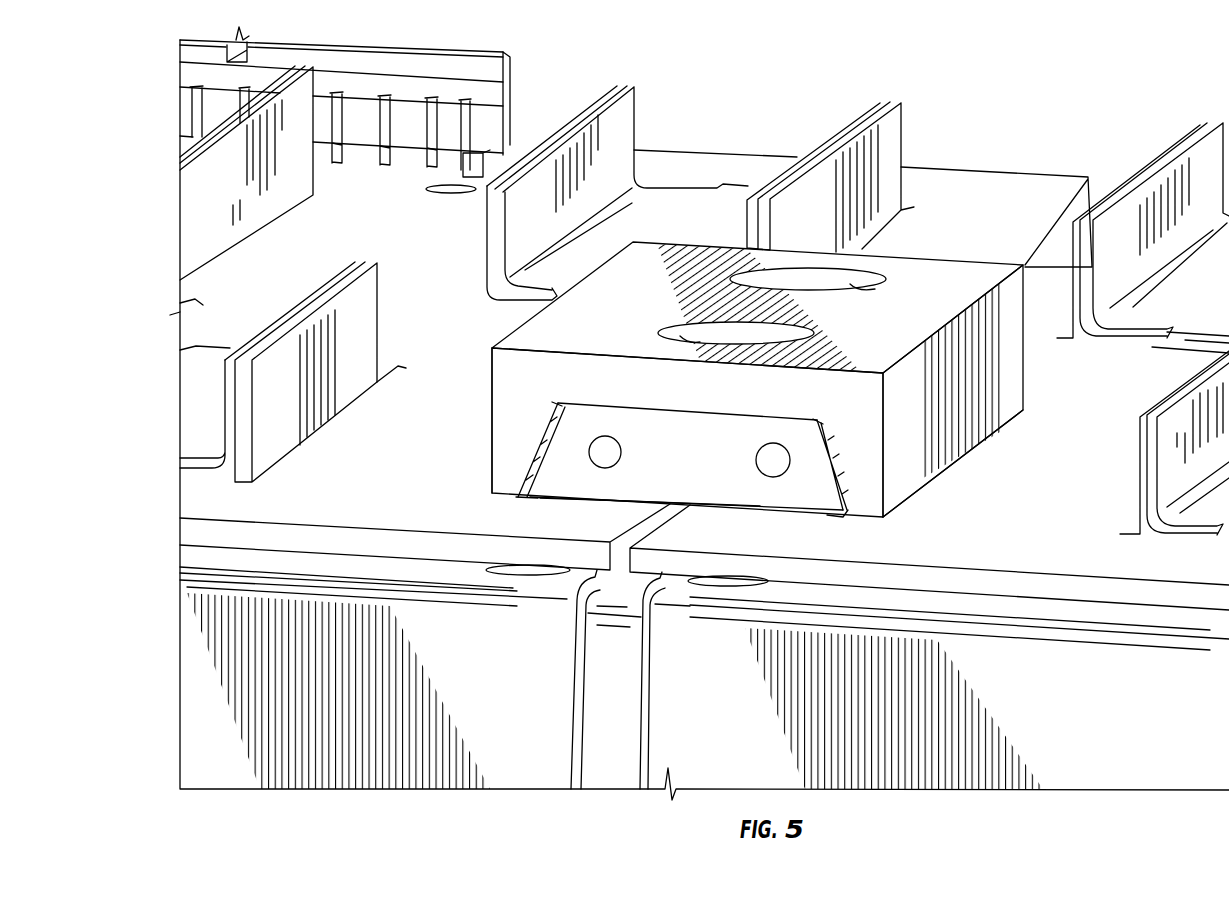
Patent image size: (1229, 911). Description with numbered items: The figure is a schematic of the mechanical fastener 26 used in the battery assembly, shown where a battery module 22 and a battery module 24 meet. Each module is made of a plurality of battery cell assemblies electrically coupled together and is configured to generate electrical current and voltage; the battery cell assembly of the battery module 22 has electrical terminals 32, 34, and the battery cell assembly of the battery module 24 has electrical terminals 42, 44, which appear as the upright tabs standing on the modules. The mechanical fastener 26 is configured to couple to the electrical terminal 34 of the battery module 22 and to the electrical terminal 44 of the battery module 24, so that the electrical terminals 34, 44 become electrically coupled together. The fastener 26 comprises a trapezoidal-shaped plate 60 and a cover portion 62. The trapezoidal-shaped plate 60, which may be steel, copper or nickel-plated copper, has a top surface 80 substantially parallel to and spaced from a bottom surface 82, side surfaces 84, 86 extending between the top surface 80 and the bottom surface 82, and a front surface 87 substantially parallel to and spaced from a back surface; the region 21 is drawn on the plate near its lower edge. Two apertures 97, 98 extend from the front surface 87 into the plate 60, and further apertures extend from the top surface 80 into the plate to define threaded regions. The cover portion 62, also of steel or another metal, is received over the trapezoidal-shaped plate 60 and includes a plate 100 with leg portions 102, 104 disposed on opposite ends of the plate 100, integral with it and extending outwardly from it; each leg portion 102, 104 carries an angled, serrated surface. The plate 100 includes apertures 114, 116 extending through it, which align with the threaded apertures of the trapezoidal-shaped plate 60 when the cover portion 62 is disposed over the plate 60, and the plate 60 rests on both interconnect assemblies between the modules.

The lower edge of spring clip 21 is at (568, 492).
The battery module 22 is at (519, 673).
The battery module 24 is at (718, 673).
The mechanical fastener 26 is at (917, 250).
The electrical terminal 32 is at (892, 140).
The electrical terminal 34 is at (528, 450).
The electrical terminal 42 is at (1072, 293).
The electrical terminal 44 is at (850, 493).
The trapezoidal-shaped plate 60 is at (767, 497).
The cover portion 62 is at (958, 277).
The top surface 80 is at (710, 415).
The bottom surface 82 is at (620, 497).
The side surface 84 is at (558, 403).
The side surface 86 is at (817, 422).
The front surface 87 is at (692, 485).
The aperture 97 is at (616, 440).
The aperture 98 is at (760, 463).
The plate 100 is at (857, 397).
The leg portion 102 is at (492, 400).
The leg portion 104 is at (905, 497).
The aperture 114 is at (683, 340).
The aperture 116 is at (853, 280).